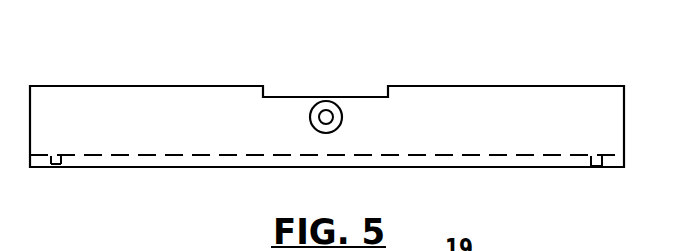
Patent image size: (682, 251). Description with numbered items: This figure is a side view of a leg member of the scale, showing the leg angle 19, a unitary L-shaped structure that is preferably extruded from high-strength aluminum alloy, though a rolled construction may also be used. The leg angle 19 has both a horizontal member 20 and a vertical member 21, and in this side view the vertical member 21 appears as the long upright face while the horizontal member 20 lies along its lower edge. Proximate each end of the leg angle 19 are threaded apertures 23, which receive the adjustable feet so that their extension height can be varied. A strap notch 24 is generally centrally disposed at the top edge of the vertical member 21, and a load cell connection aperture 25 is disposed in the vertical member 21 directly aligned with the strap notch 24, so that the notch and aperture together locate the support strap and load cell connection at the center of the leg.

The leg angle 19 is at (572, 79).
The horizontal member 20 is at (136, 168).
The vertical member 21 is at (173, 135).
The threaded apertures 23 is at (594, 168).
The strap notch 24 is at (265, 89).
The load cell connection aperture 25 is at (330, 101).